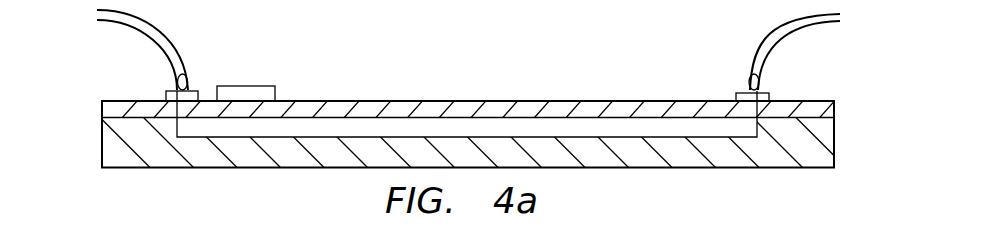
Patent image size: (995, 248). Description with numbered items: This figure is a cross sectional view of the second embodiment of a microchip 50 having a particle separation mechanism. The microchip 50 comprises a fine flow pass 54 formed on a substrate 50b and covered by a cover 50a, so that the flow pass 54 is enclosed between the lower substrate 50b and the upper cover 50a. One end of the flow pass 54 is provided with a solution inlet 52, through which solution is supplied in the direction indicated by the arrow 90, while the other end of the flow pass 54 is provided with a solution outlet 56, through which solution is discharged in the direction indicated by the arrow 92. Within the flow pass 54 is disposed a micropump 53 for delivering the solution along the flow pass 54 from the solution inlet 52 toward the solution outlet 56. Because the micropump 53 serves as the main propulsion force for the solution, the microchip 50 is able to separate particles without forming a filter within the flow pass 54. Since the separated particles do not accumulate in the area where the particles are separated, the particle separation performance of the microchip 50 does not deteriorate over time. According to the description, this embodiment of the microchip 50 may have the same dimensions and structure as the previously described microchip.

The microchip 50 is at (614, 63).
The cover 50a is at (117, 102).
The substrate 50b is at (110, 141).
The solution inlet 52 is at (188, 96).
The micropump 53 is at (248, 87).
The flow pass 54 is at (491, 130).
The solution outlet 56 is at (745, 100).
The arrow 90 is at (92, 15).
The arrow 92 is at (878, 17).